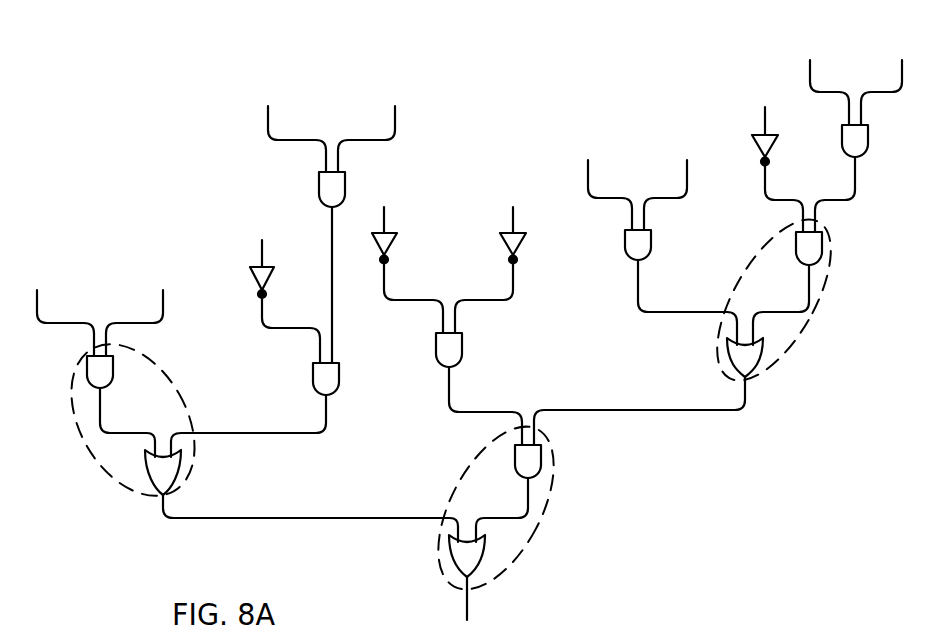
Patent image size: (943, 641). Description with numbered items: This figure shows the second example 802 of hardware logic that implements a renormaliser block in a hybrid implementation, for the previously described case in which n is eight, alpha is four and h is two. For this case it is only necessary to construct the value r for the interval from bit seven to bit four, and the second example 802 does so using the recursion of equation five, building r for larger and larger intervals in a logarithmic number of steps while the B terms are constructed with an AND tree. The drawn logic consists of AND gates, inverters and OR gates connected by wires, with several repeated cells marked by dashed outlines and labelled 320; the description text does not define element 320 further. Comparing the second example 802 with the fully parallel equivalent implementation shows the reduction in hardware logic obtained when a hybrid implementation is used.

The prefix operator cell 320 is at (122, 474).
The second example 802 is at (786, 0).